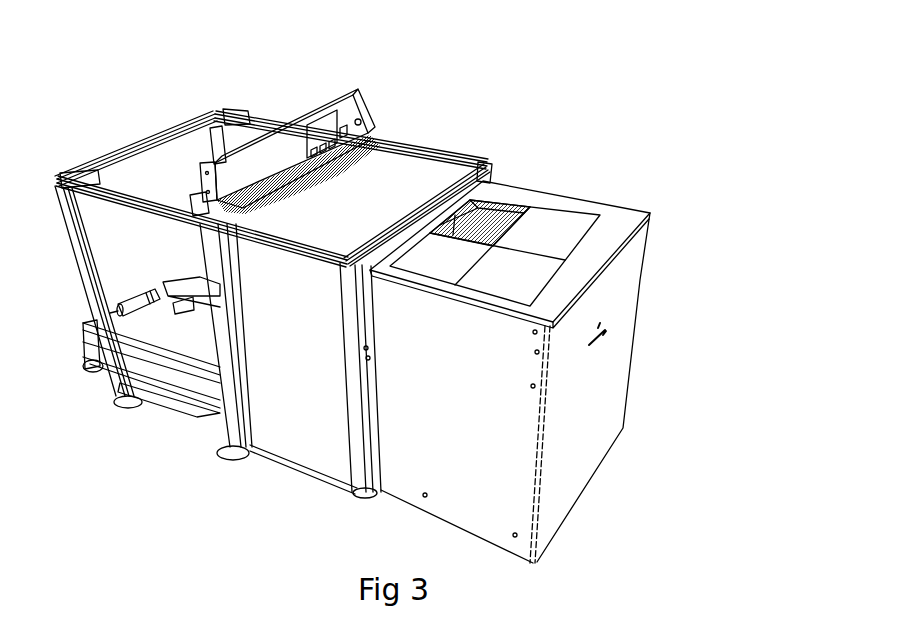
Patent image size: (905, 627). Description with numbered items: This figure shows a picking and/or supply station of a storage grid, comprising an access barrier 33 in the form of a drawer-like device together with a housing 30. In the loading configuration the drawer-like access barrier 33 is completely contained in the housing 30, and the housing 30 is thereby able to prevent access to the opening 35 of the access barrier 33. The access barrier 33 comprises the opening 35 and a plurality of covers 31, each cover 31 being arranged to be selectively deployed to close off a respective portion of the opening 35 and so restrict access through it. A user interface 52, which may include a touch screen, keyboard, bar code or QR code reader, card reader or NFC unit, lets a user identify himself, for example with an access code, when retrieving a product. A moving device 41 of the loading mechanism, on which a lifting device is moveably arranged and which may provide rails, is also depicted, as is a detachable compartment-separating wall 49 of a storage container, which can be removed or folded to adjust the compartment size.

The housing 30 is at (393, 177).
The cover 31 is at (567, 218).
The access barrier 33 is at (623, 353).
The opening 35 is at (547, 200).
The moving device 41 is at (197, 368).
The detachable compartment-separating wall 49 is at (490, 238).
The user interface 52 is at (317, 130).